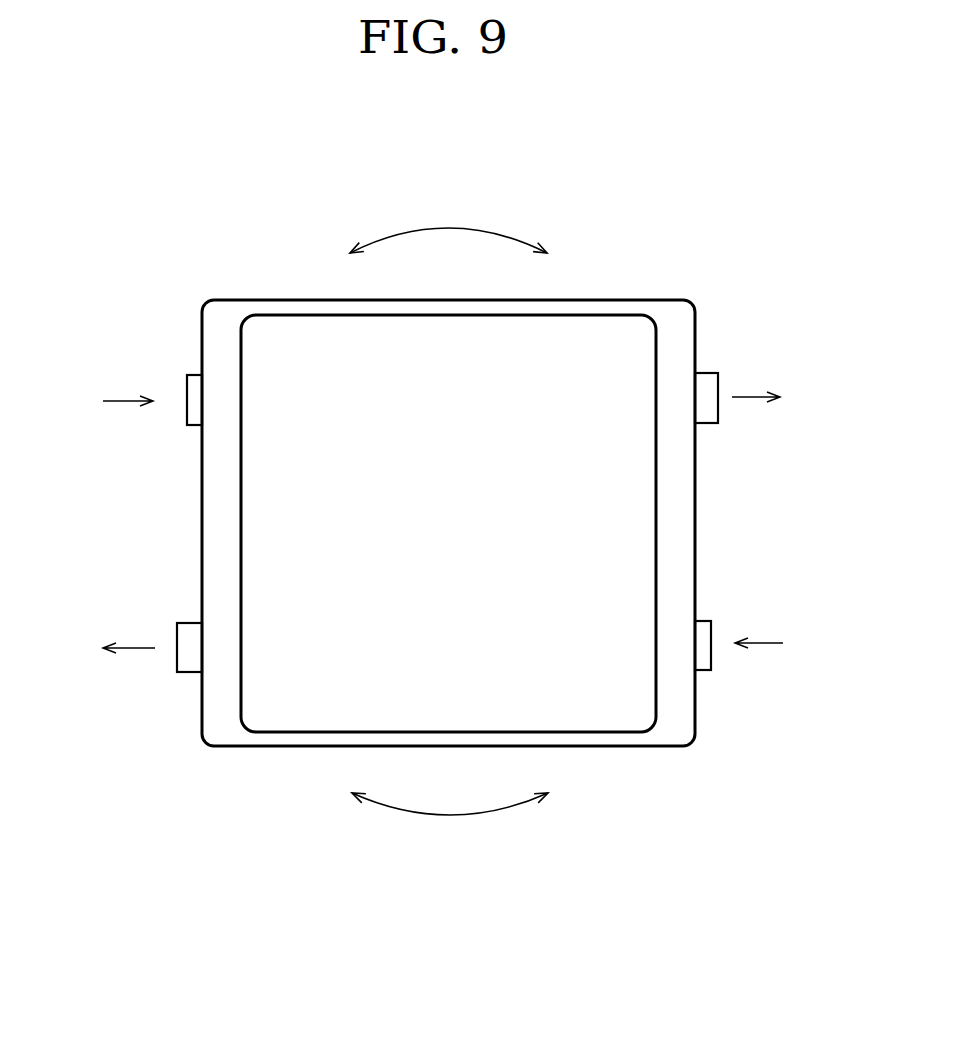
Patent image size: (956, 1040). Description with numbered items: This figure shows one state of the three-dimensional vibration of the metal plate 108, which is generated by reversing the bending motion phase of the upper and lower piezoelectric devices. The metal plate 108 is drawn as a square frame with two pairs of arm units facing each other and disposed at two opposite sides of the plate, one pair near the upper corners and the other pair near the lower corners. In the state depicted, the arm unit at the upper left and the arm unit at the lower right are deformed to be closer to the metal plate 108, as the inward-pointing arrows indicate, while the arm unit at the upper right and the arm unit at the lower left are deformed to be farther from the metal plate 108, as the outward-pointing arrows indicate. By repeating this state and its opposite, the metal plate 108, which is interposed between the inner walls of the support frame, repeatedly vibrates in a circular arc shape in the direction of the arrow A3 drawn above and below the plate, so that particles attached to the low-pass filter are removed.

The metal plate 108 is at (665, 308).
The arrow A3 is at (447, 228).